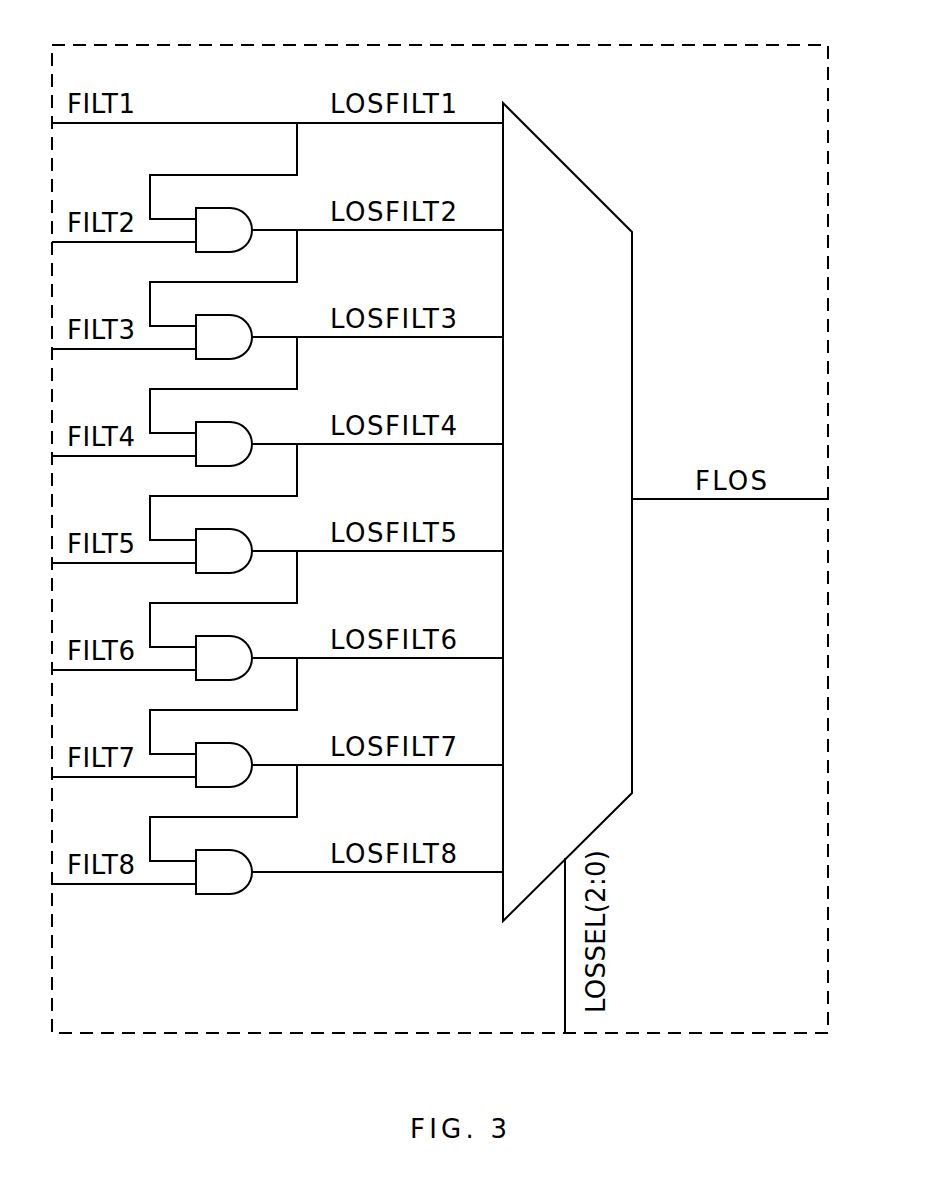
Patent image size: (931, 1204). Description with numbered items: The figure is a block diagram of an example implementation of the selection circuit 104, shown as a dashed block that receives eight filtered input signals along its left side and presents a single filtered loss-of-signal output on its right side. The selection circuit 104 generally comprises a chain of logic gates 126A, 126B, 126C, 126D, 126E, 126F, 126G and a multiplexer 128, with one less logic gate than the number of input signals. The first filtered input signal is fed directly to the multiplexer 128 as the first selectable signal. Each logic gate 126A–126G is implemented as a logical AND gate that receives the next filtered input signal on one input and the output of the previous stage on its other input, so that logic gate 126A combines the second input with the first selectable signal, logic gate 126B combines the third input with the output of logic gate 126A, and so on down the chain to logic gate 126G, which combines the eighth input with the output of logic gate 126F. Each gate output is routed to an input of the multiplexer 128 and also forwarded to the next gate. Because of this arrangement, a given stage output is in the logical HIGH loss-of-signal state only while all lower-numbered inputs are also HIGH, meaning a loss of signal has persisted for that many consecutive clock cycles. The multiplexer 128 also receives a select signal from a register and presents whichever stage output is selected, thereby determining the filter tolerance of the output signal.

The selection circuit 104 is at (188, 44).
The logic gate 126A is at (217, 208).
The logic gate 126B is at (217, 315).
The logic gate 126C is at (217, 422).
The logic gate 126D is at (217, 529).
The logic gate 126E is at (217, 636).
The logic gate 126F is at (217, 743).
The logic gate 126G is at (217, 850).
The multiplexer 128 is at (590, 188).